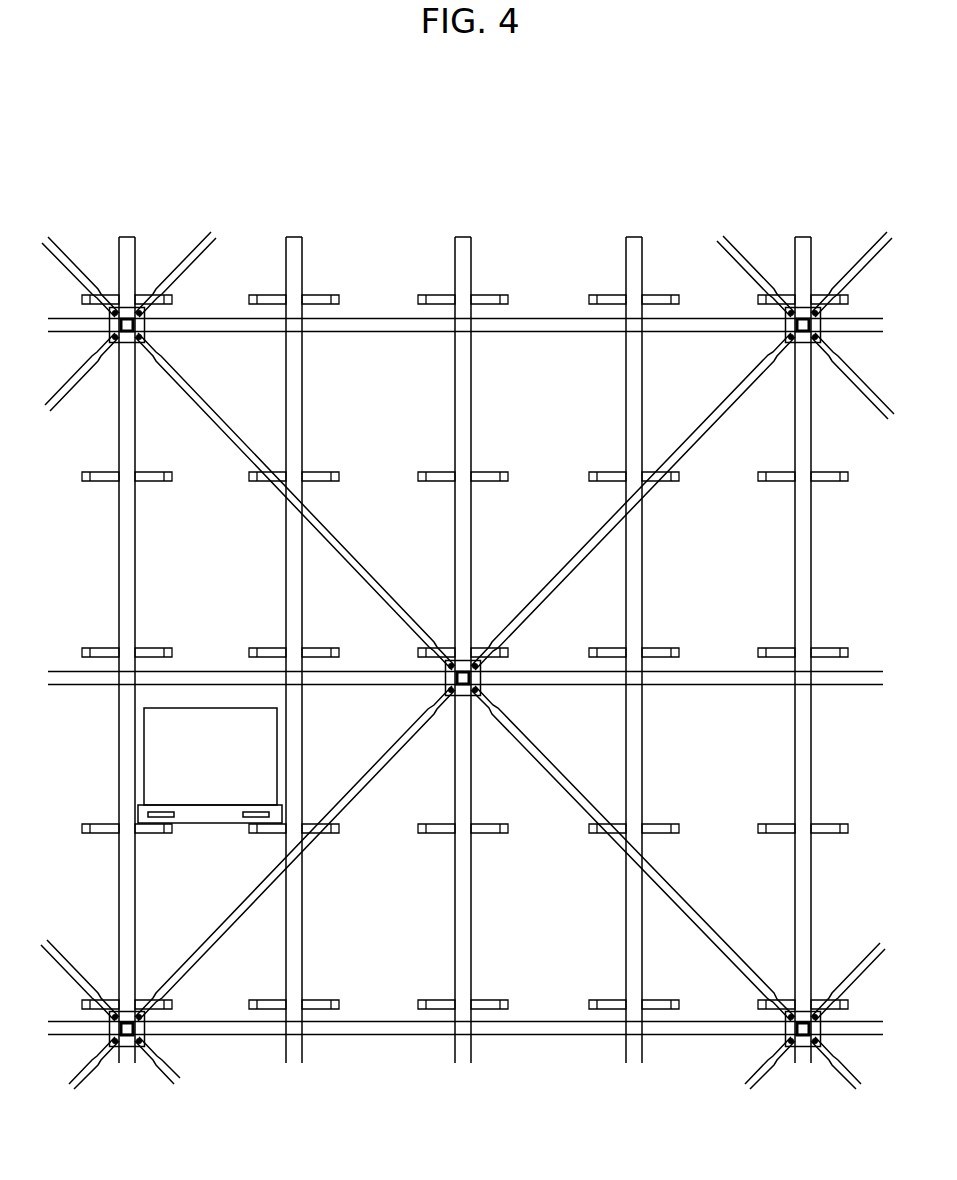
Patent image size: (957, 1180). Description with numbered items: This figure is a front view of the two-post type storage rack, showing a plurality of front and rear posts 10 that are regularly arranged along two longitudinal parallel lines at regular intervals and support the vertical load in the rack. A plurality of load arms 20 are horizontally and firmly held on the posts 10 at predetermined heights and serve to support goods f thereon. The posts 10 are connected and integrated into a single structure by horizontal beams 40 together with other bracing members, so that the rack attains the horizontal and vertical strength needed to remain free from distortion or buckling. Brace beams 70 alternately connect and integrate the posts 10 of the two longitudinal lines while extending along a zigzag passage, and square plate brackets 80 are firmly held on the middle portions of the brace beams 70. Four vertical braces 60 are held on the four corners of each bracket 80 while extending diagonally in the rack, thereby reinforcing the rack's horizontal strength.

The front and rear posts 10 is at (132, 955).
The load arms 20 is at (272, 1009).
The horizontal beams 40 is at (345, 1036).
The vertical braces 60 is at (343, 808).
The brace beams 70 is at (462, 693).
The brackets 80 is at (488, 693).
The goods f is at (147, 768).